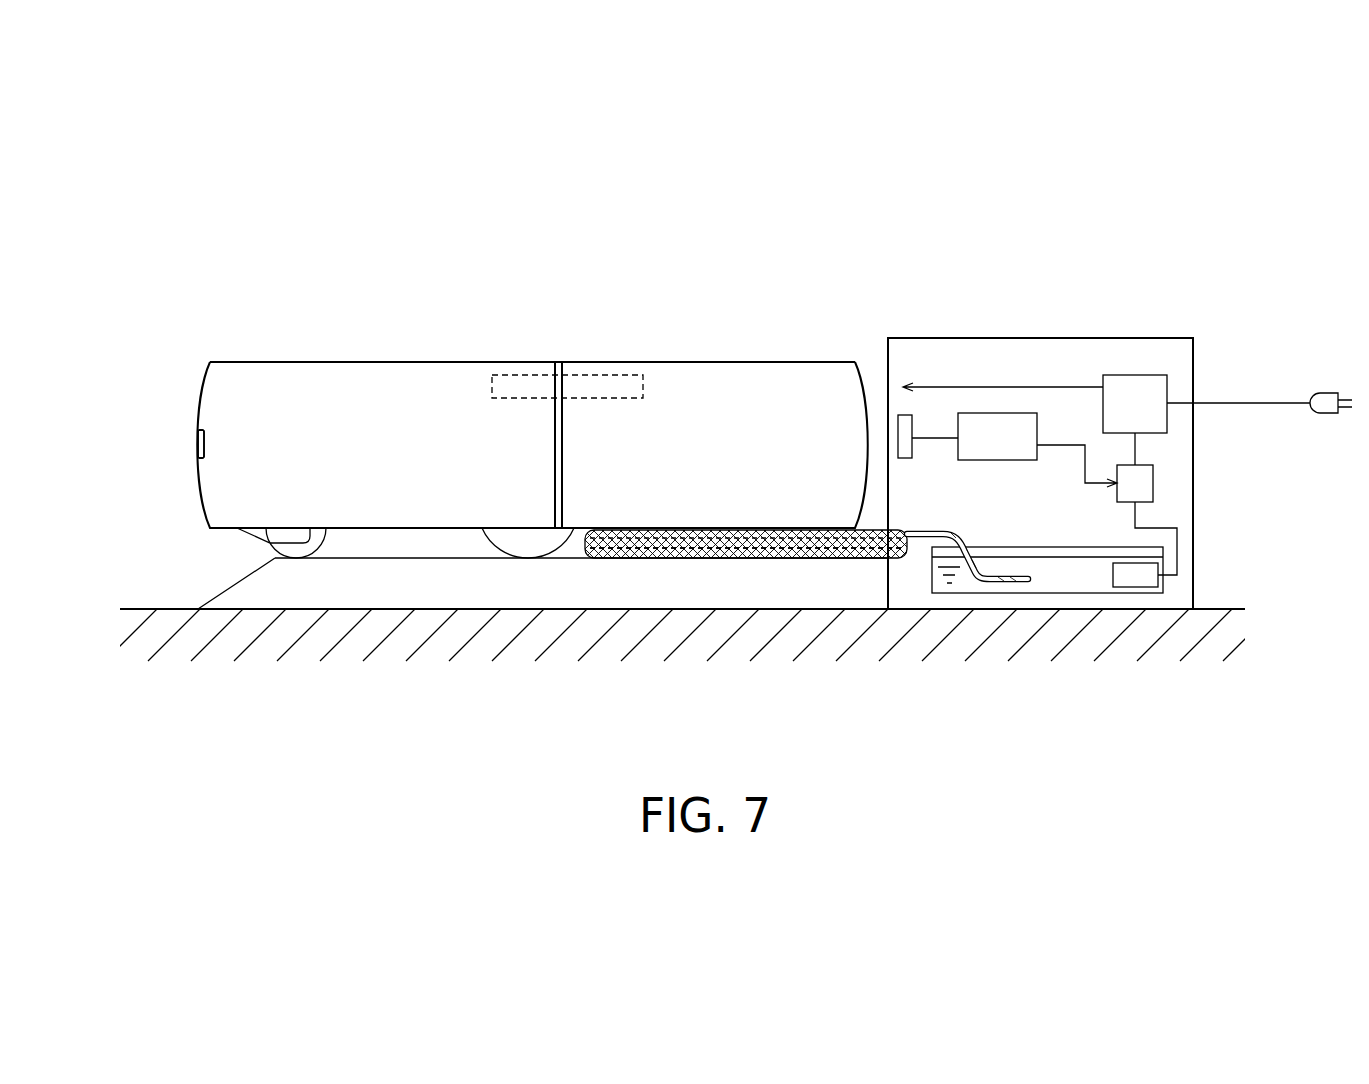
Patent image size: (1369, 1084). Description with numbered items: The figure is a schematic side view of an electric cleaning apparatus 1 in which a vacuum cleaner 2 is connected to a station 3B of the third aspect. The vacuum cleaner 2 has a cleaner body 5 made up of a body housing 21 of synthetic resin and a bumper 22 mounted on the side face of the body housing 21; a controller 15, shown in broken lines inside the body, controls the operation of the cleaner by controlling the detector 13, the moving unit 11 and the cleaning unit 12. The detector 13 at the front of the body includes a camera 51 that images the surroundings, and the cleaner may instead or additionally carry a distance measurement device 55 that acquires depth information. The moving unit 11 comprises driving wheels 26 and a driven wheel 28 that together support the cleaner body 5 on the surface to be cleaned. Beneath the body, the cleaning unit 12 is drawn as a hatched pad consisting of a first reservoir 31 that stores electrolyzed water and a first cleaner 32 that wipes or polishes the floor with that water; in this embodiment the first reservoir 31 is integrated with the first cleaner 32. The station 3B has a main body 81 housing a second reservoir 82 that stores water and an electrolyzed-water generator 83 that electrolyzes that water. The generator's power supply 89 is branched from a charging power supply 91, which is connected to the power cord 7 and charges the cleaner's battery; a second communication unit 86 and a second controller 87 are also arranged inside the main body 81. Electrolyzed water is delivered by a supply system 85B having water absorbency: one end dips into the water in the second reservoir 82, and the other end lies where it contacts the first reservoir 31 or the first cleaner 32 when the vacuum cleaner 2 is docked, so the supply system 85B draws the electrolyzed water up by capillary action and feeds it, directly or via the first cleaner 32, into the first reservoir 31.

The electric cleaning apparatus 1 is at (846, 231).
The vacuum cleaner 2 is at (541, 334).
The cleaner body 5 is at (726, 354).
The bumper 22 is at (413, 390).
The body housing 21 is at (688, 372).
The controller 15 is at (612, 375).
The detector 13 is at (198, 443).
The camera 51 is at (201, 444).
The distance measurement device 55 is at (201, 444).
The driven wheel 28 is at (297, 559).
The moving unit 11 is at (496, 557).
The driving wheels 26 is at (541, 552).
The cleaning unit 12 is at (693, 569).
The first reservoir 31 is at (605, 545).
The first cleaner 32 is at (666, 560).
The station 3B is at (948, 338).
The main body 81 is at (1193, 360).
The charging power supply 91 is at (1167, 427).
The power cord 7 is at (1280, 405).
The power supply 89 is at (1153, 482).
The second communication unit 86 is at (903, 458).
The second controller 87 is at (1022, 460).
The second reservoir 82 is at (1042, 594).
The electrolyzed-water generator 83 is at (1132, 588).
The supply system 85B is at (962, 523).